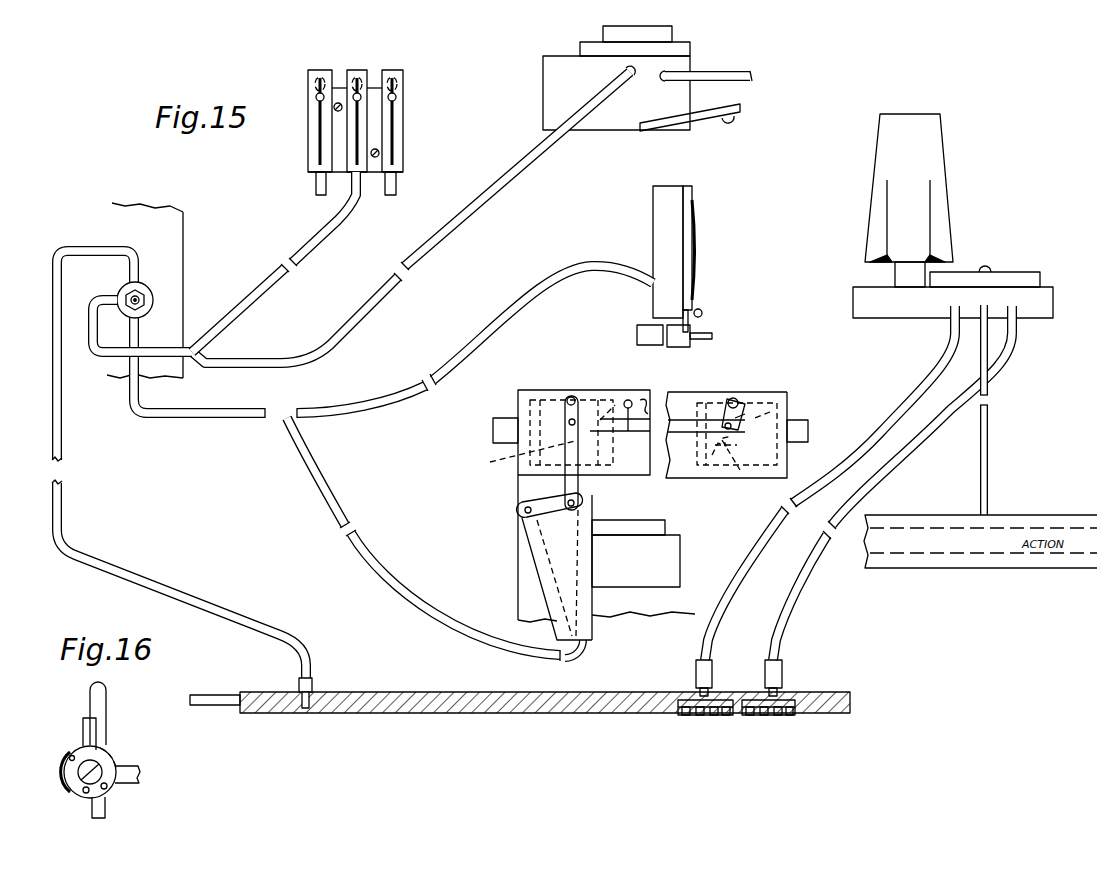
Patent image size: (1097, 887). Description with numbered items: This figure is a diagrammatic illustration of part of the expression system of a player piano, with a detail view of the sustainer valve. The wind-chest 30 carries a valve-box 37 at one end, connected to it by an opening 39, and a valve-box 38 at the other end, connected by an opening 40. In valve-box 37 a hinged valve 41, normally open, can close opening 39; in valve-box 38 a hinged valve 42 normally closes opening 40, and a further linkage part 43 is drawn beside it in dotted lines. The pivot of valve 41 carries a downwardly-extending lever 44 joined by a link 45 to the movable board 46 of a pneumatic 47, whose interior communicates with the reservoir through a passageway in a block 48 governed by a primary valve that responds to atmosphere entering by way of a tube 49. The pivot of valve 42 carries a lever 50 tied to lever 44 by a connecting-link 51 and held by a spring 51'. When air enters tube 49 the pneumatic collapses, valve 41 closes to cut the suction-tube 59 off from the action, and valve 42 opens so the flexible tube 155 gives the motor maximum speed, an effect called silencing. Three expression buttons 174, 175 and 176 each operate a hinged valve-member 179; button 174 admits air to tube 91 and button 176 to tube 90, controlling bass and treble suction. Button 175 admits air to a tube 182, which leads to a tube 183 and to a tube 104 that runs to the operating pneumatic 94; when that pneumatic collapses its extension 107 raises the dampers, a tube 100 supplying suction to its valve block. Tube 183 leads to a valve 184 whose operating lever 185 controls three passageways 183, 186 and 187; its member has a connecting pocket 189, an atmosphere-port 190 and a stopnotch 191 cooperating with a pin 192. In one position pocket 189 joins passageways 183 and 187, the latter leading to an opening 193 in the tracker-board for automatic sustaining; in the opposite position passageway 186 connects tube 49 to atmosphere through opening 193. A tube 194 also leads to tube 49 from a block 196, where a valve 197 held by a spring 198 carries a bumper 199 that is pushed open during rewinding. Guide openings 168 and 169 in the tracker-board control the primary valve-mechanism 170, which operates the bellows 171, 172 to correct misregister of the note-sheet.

In FIG. 15, the expression button 174 is at (322, 70).
In FIG. 15, the expression button 175 is at (360, 70).
In FIG. 15, the expression button 176 is at (400, 76).
In FIG. 15, the valve-member 179 is at (353, 140).
In FIG. 15, the tube 91 is at (316, 188).
In FIG. 15, the tube 90 is at (396, 186).
In FIG. 15, the operating pneumatic 94 is at (543, 93).
In FIG. 15, the tube 100 is at (752, 76).
In FIG. 15, the extension 107 is at (715, 112).
In FIG. 15, the tube 104 is at (458, 236).
In FIG. 15, the bellows 172 is at (880, 217).
In FIG. 15, the bellows 171 is at (933, 220).
In FIG. 15, the primary valve-mechanism 170 is at (1000, 300).
In FIG. 15, the block 196 is at (668, 236).
In FIG. 15, the spring 198 is at (695, 266).
In FIG. 15, the valve 197 is at (688, 303).
In FIG. 15, the bumper 199 is at (648, 333).
In FIG. 15, the passageway 187 is at (130, 258).
In FIG. 16, the passageway 187 is at (82, 725).
In FIG. 15, the valve 184 is at (152, 290).
In FIG. 16, the valve 184 is at (78, 777).
In FIG. 15, the tube 183 is at (163, 352).
In FIG. 16, the tube 183 is at (130, 783).
In FIG. 15, the tube 182 is at (268, 290).
In FIG. 15, the passageway 186 is at (186, 413).
In FIG. 16, the passageway 186 is at (104, 815).
In FIG. 15, the tube 194 is at (403, 398).
In FIG. 15, the valve-box 37 is at (528, 404).
In FIG. 15, the opening 39 is at (600, 420).
In FIG. 15, the spring 51' is at (650, 398).
In FIG. 15, the wind-chest 30 is at (683, 404).
In FIG. 15, the opening 40 is at (738, 405).
In FIG. 15, the lever 50 is at (745, 414).
In FIG. 15, the valve-box 38 is at (780, 410).
In FIG. 15, the suction-tube 59 is at (493, 430).
In FIG. 15, the valve 41 is at (516, 456).
In FIG. 15, the lever 44 is at (563, 488).
In FIG. 15, the link 45 is at (535, 513).
In FIG. 15, the movable board 46 is at (540, 565).
In FIG. 15, the pneumatic 47 is at (568, 582).
In FIG. 15, the block 48 is at (672, 557).
In FIG. 15, the tube 49 is at (420, 598).
In FIG. 15, the opening 193 is at (306, 714).
In FIG. 15, the guide opening 168 is at (700, 716).
In FIG. 15, the guide opening 169 is at (770, 716).
In FIG. 15, the link 43 is at (740, 470).
In FIG. 15, the valve 42 is at (720, 446).
In FIG. 15, the flexible tube 155 is at (808, 433).
In FIG. 15, the connecting-link 51 is at (620, 436).
In FIG. 16, the operating lever 185 is at (102, 696).
In FIG. 16, the connecting pocket 189 is at (112, 758).
In FIG. 16, the pin 192 is at (66, 768).
In FIG. 16, the stopnotch 191 is at (72, 788).
In FIG. 16, the atmosphere-port 190 is at (86, 794).